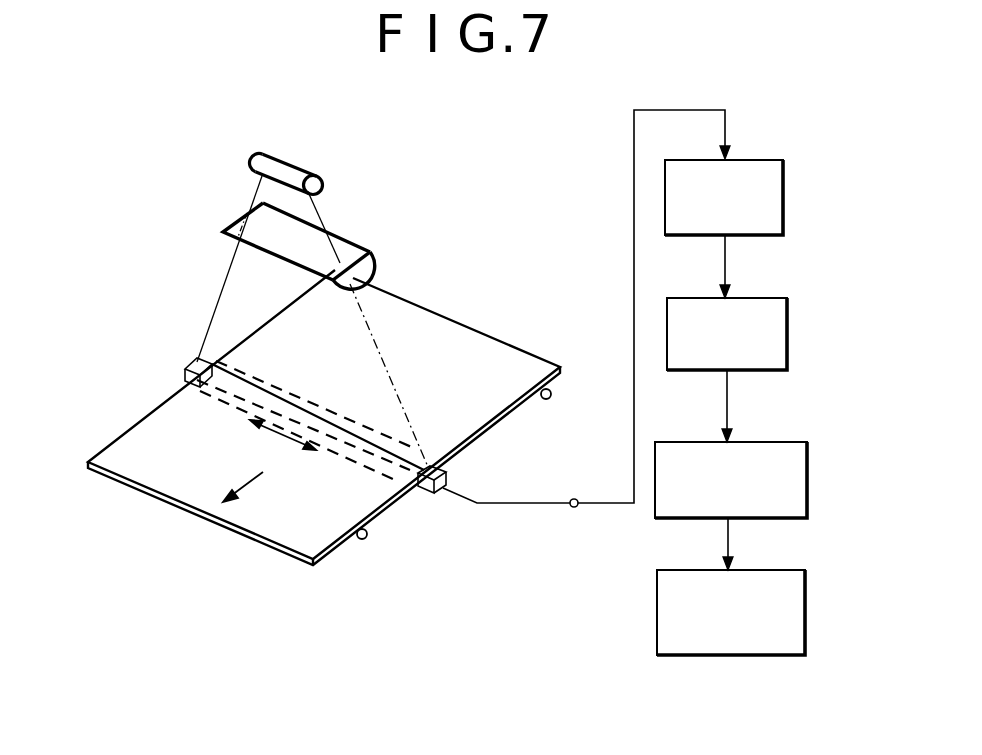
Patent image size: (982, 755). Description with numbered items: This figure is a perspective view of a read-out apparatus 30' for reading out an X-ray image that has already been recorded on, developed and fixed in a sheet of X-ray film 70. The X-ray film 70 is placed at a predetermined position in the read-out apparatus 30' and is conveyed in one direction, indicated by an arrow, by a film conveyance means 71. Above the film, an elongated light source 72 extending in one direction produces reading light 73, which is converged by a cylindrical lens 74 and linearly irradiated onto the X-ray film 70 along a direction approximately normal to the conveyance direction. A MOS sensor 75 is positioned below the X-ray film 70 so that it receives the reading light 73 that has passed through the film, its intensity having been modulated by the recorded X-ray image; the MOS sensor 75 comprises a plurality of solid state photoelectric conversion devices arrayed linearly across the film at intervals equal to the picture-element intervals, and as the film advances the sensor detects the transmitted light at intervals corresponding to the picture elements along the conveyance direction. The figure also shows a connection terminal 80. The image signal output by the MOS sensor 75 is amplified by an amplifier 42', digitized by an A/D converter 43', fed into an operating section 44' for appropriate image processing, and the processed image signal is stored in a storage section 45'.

The read-out apparatus 30' is at (352, 237).
The elongated light source 72 is at (310, 173).
The reading light 73 is at (317, 210).
The cylindrical lens 74 is at (365, 250).
The X-ray film 70 is at (527, 353).
The film conveyance means 71 is at (551, 397).
The MOS sensor 75 is at (447, 476).
The connection terminal 80 is at (574, 507).
The amplifier 42' is at (727, 166).
The A/D converter 43' is at (733, 307).
The operating section 44' is at (731, 500).
The storage section 45' is at (731, 634).